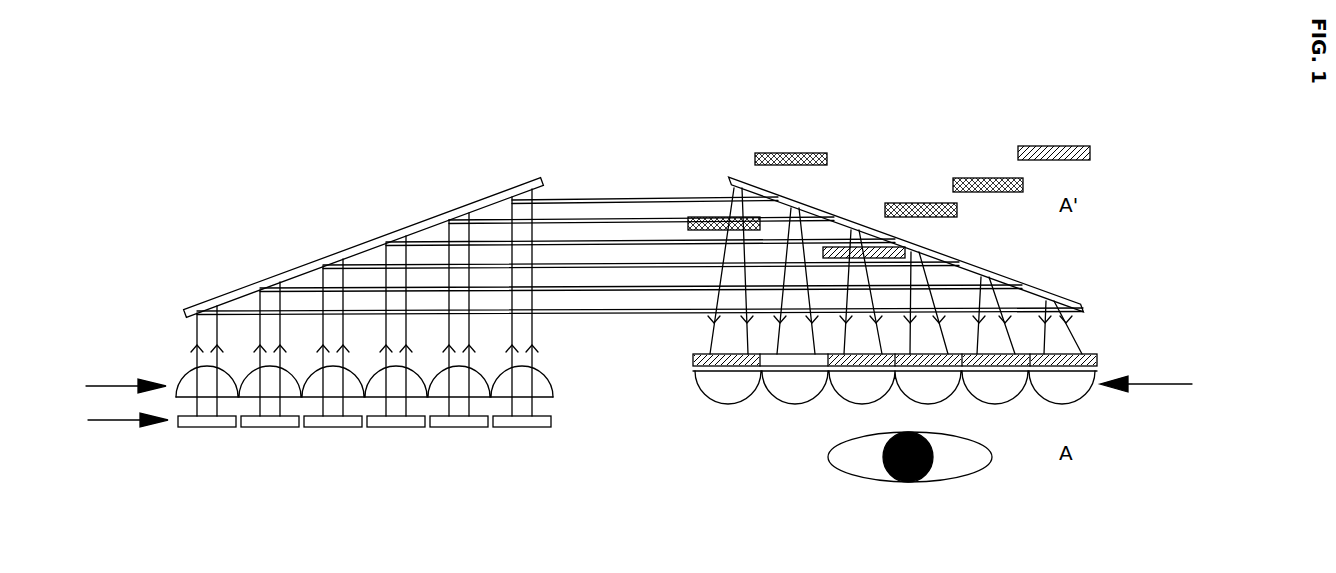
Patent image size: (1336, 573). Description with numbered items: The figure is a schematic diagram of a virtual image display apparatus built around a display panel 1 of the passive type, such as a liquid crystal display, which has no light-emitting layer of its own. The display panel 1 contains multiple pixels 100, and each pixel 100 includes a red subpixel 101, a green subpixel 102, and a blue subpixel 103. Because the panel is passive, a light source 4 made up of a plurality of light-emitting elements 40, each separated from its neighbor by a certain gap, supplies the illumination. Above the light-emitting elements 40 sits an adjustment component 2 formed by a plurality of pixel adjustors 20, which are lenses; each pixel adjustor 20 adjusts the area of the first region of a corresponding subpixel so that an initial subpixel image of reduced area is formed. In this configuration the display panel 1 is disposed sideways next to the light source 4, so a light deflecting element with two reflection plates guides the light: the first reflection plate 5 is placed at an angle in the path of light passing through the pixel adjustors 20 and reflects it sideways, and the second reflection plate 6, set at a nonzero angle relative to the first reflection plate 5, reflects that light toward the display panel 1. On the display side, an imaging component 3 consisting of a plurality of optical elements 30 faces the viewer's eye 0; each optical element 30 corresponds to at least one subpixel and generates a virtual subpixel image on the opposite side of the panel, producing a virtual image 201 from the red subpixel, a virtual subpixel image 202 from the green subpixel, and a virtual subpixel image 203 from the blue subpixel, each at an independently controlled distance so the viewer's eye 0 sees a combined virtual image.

The viewer's eye 0 is at (988, 465).
The display panel 1 is at (1097, 360).
The adjustment component 2 is at (118, 389).
The imaging component 3 is at (1155, 387).
The light source 4 is at (120, 422).
The first reflection plate 5 is at (307, 270).
The second reflection plate 6 is at (953, 263).
The pixel adjustor 20 is at (188, 385).
The optical element 30 is at (1070, 388).
The light-emitting element 40 is at (207, 424).
The pixel 100 is at (1088, 293).
The red subpixel 101 is at (943, 354).
The green subpixel 102 is at (1010, 354).
The blue subpixel 103 is at (1085, 354).
The virtual image 201 is at (920, 208).
The virtual subpixel image 202 is at (987, 183).
The virtual subpixel image 203 is at (1055, 152).